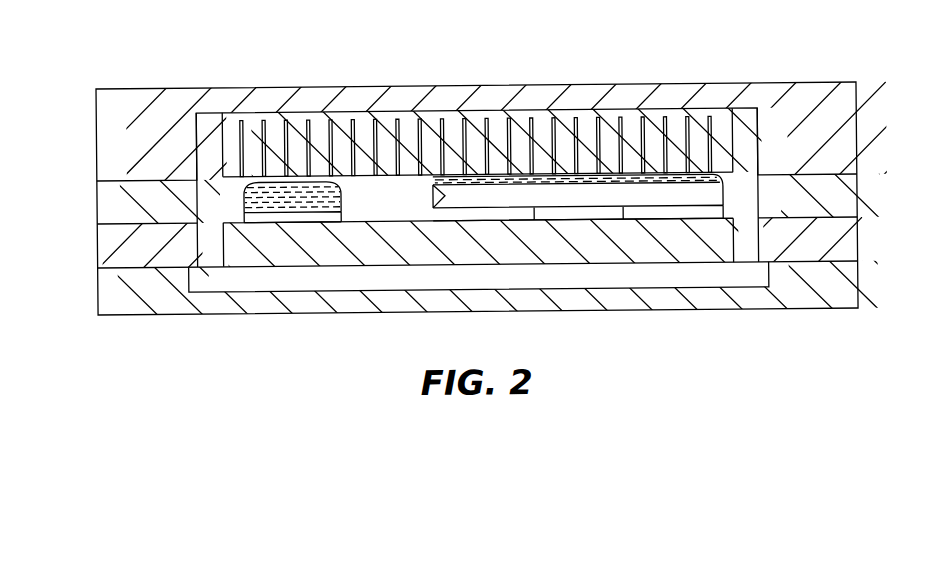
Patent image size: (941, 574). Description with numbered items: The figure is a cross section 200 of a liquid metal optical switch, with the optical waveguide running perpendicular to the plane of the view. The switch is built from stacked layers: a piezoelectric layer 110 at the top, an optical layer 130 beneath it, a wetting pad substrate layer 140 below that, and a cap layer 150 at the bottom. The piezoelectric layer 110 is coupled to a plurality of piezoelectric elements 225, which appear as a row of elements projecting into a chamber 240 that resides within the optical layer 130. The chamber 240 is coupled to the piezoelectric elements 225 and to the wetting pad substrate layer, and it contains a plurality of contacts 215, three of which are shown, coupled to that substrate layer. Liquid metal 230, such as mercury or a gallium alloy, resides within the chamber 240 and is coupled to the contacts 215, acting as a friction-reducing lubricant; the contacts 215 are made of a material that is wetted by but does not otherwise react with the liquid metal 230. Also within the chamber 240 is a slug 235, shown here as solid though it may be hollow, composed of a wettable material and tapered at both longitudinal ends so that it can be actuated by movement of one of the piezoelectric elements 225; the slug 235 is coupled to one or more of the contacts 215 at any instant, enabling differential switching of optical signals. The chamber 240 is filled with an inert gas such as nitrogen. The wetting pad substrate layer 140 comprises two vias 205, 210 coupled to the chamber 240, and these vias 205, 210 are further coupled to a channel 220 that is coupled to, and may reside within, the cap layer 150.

The cross section 200 is at (163, 59).
The piezoelectric layer 110 is at (95, 125).
The optical layer 130 is at (95, 198).
The wetting pad substrate layer 140 is at (95, 252).
The cap layer 150 is at (95, 306).
The via 205 is at (208, 250).
The via 210 is at (745, 251).
The contacts 215 is at (335, 225).
The channel 220 is at (290, 285).
The piezoelectric elements 225 is at (453, 123).
The liquid metal 230 is at (567, 182).
The slug 235 is at (598, 208).
The chamber 240 is at (381, 203).